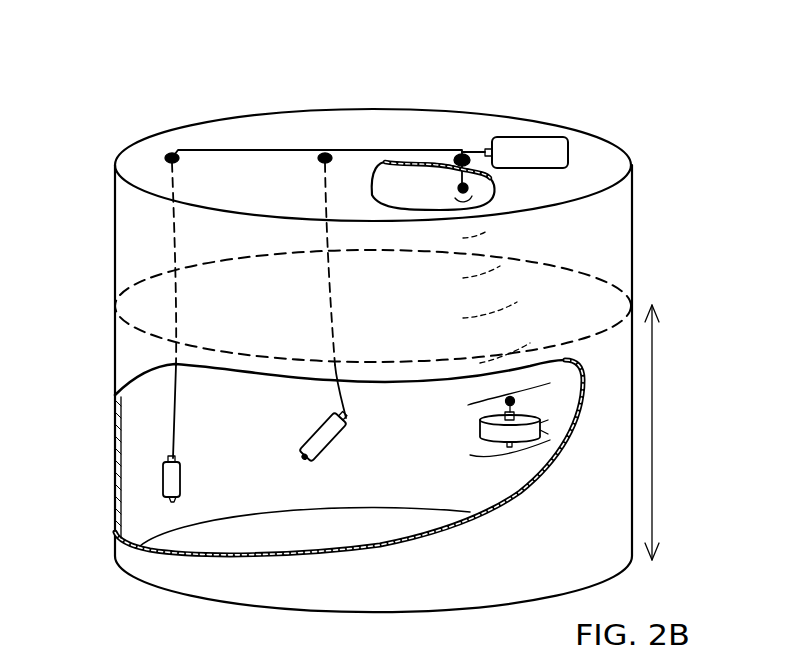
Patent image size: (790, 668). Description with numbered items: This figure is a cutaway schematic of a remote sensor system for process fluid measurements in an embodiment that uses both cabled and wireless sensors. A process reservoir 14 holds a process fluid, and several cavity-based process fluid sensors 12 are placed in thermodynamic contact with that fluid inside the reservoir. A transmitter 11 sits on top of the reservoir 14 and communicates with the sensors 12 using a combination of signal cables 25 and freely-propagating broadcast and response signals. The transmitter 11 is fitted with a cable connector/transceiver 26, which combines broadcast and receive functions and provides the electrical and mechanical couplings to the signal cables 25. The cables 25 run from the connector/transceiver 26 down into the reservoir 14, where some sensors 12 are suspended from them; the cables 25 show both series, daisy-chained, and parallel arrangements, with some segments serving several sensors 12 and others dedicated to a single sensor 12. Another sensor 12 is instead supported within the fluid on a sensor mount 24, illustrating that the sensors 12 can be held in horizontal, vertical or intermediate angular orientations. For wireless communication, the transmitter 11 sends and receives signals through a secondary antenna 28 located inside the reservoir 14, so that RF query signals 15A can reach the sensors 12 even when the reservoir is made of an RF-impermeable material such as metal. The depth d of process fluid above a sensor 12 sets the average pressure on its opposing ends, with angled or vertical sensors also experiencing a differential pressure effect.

The transmitter 11 is at (534, 144).
The cavity-based process fluid sensors 12 is at (196, 446).
The process reservoir 14 is at (634, 177).
The RF query signals 15A is at (463, 278).
The sensor mounts 24 is at (310, 442).
The signal cables 25 is at (172, 247).
The cable connector/transceiver 26 is at (168, 153).
The secondary antenna 28 is at (452, 177).
The depth of process fluid d is at (662, 432).